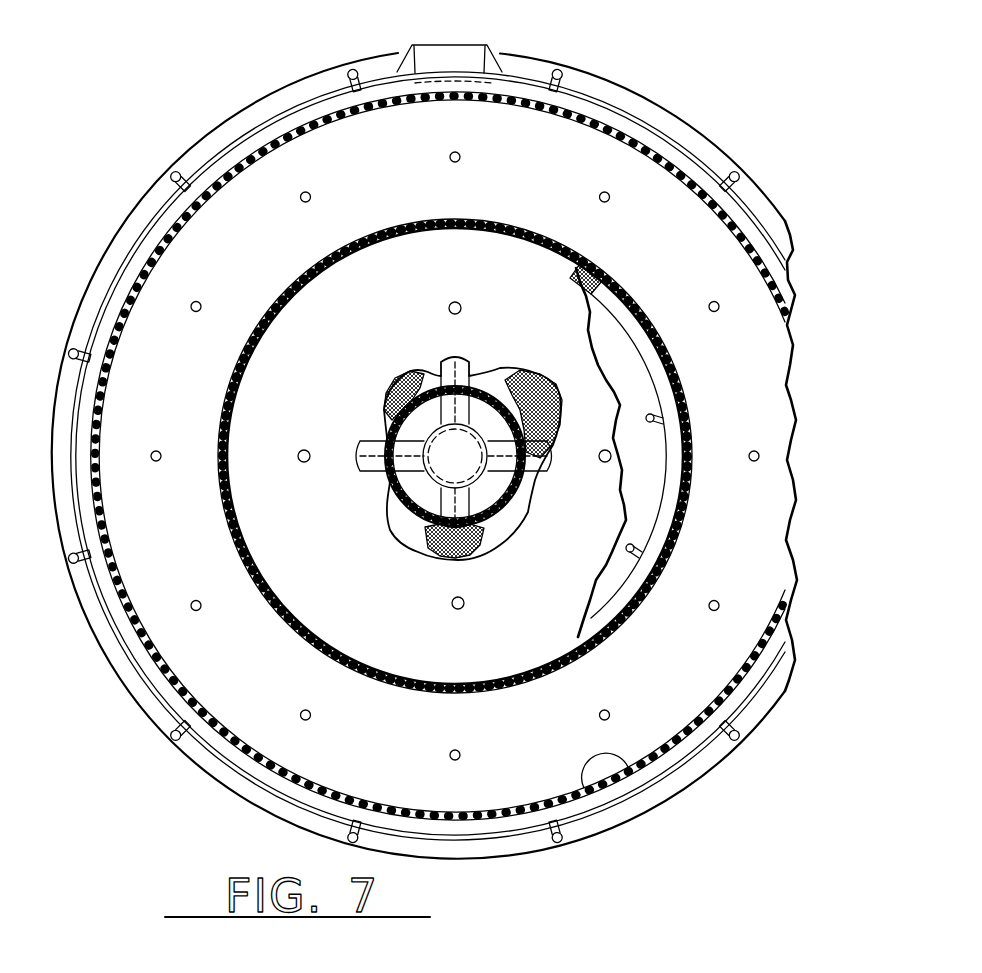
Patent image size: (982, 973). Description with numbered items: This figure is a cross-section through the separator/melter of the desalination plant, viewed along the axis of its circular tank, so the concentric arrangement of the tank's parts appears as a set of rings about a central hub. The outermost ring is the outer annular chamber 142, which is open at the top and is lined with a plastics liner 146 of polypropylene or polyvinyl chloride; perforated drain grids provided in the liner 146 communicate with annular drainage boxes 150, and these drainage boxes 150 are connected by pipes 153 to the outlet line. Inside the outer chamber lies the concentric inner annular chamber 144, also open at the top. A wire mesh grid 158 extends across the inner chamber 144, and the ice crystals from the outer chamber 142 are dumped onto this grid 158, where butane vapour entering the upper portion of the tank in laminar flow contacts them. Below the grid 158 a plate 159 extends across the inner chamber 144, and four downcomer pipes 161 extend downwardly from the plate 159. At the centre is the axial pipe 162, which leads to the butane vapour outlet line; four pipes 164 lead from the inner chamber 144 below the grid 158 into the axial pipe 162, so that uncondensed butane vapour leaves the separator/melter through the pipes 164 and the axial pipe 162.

The outer annular chamber 142 is at (380, 211).
The inner annular chamber 144 is at (630, 566).
The plastics liner 146 is at (646, 768).
The annular drainage boxes 150 is at (667, 523).
The pipes 153 is at (575, 78).
The wire mesh grid 158 is at (478, 378).
The plate 159 is at (541, 641).
The downcomer pipes 161 is at (451, 606).
The axial pipe 162 is at (453, 444).
The pipes 164 is at (386, 466).